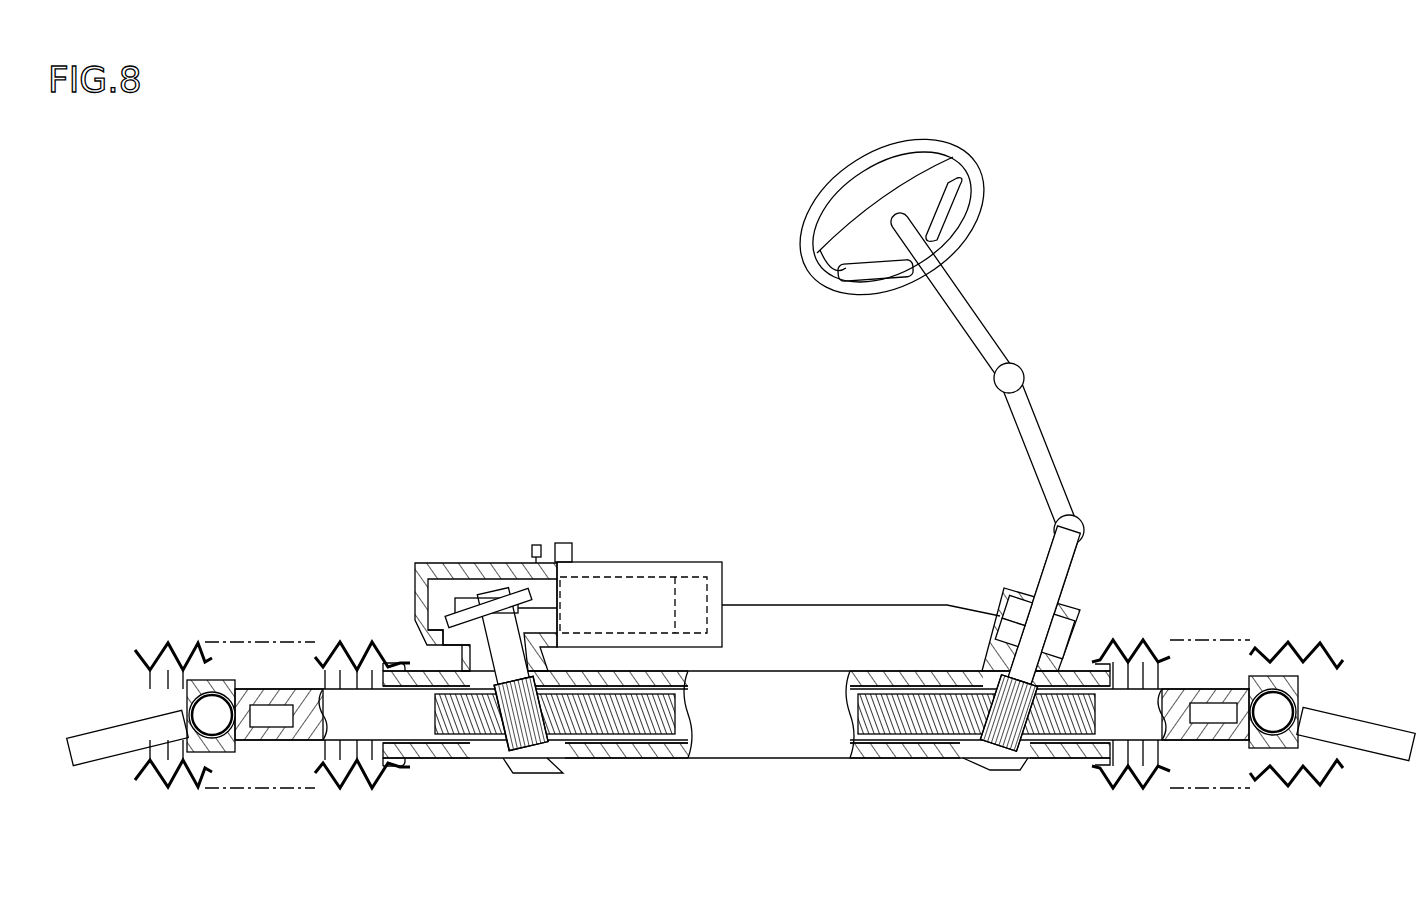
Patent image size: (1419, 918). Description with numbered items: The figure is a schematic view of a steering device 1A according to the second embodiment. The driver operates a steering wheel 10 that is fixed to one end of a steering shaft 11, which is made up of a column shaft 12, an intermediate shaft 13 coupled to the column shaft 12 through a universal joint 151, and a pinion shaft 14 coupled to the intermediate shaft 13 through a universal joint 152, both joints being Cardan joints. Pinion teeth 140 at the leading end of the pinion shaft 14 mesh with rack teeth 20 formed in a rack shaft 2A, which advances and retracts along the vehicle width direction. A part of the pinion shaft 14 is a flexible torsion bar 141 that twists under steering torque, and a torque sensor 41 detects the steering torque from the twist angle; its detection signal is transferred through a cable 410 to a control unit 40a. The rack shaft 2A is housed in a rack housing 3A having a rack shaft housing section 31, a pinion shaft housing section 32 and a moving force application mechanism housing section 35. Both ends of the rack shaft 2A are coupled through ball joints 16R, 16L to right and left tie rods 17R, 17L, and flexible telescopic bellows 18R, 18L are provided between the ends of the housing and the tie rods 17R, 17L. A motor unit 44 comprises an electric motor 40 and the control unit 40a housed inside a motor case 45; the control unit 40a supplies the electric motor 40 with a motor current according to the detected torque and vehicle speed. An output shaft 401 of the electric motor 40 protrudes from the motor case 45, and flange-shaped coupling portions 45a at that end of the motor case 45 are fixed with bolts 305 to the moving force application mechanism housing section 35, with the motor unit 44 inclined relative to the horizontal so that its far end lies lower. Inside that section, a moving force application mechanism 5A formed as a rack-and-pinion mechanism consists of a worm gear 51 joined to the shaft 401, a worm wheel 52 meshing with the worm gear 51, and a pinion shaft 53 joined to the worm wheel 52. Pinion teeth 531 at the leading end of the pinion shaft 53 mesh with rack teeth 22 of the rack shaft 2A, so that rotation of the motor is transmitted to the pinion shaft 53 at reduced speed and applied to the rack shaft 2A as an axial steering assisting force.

The steering device 1A is at (1142, 283).
The steering wheel 10 is at (967, 152).
The steering shaft 11 is at (981, 465).
The column shaft 12 is at (985, 362).
The intermediate shaft 13 is at (1030, 467).
The pinion shaft 14 is at (1045, 573).
The universal joint 151 is at (997, 388).
The universal joint 152 is at (1055, 527).
The rack shaft 2A is at (1128, 670).
The rack teeth 20 is at (1030, 727).
The rack teeth 22 is at (500, 730).
The rack housing 3A is at (880, 763).
The rack shaft housing section 31 is at (808, 758).
The pinion shaft housing section 32 is at (1072, 610).
The moving force application mechanism housing section 35 is at (463, 612).
The electric motor 40 is at (610, 587).
The control unit 40a is at (688, 587).
The shaft 401 is at (557, 590).
The torque sensor 41 is at (1005, 629).
The motor unit 44 is at (737, 583).
The motor case 45 is at (660, 570).
The coupling portion 45a is at (563, 543).
The cable 410 is at (822, 604).
The pinion teeth 140 is at (1010, 683).
The torsion bar 141 is at (1010, 604).
The bolt 305 is at (535, 545).
The moving force application mechanism 5A is at (450, 585).
The worm gear 51 is at (465, 620).
The worm wheel 52 is at (512, 587).
The pinion shaft 53 is at (490, 627).
The pinion teeth 531 is at (535, 730).
The ball joint 16R is at (180, 692).
The ball joint 16L is at (1297, 655).
The tie rod 17R is at (100, 750).
The tie rod 17L is at (1357, 743).
The bellows 18R is at (150, 682).
The bellows 18L is at (1337, 668).